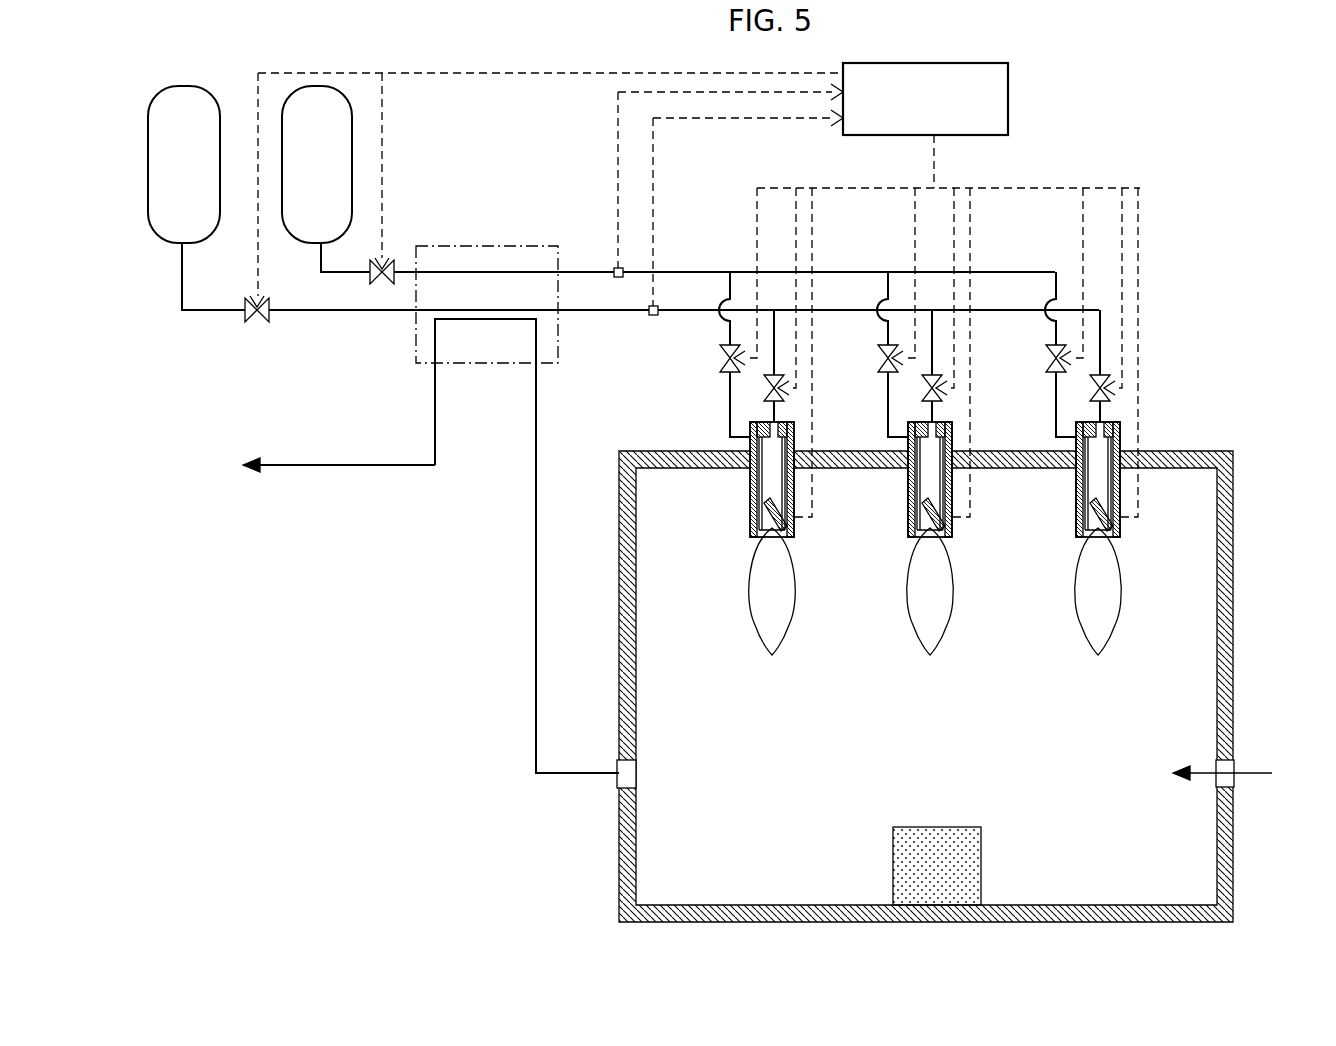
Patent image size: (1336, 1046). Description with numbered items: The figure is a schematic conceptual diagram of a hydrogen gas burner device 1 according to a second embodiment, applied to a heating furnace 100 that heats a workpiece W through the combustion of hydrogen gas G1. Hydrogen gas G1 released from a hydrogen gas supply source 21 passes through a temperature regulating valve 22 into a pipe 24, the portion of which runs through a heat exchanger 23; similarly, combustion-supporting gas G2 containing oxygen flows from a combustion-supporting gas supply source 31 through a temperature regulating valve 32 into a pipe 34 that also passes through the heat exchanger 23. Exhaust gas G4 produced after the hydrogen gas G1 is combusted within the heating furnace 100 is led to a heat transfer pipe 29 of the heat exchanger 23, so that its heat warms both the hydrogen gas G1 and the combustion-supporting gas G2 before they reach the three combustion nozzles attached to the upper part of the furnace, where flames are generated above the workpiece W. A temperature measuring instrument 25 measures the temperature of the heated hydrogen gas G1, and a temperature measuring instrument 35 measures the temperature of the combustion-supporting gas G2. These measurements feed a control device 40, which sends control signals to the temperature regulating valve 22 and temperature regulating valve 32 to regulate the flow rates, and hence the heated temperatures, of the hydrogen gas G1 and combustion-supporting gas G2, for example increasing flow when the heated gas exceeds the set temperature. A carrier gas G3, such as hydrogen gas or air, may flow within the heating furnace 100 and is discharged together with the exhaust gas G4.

The gas burner device 1 is at (1208, 150).
The hydrogen gas supply source 21 is at (195, 148).
The temperature regulating valve 22 is at (260, 323).
The heat exchanger 23 is at (557, 318).
The pipe 24 is at (400, 312).
The temperature measuring instrument 25 is at (648, 315).
The heat transfer pipe 29 is at (495, 322).
The combustion-supporting gas supply source 31 is at (317, 225).
The temperature regulating valve 32 is at (377, 262).
The pipe 34 is at (488, 273).
The temperature measuring instrument 35 is at (622, 268).
The control device 40 is at (1010, 98).
The heating furnace 100 is at (1233, 628).
The hydrogen gas G1 is at (198, 313).
The combustion-supporting gas G2 is at (565, 272).
The carrier gas G3 is at (1239, 773).
The exhaust gas G4 is at (365, 466).
The workpiece W is at (983, 861).